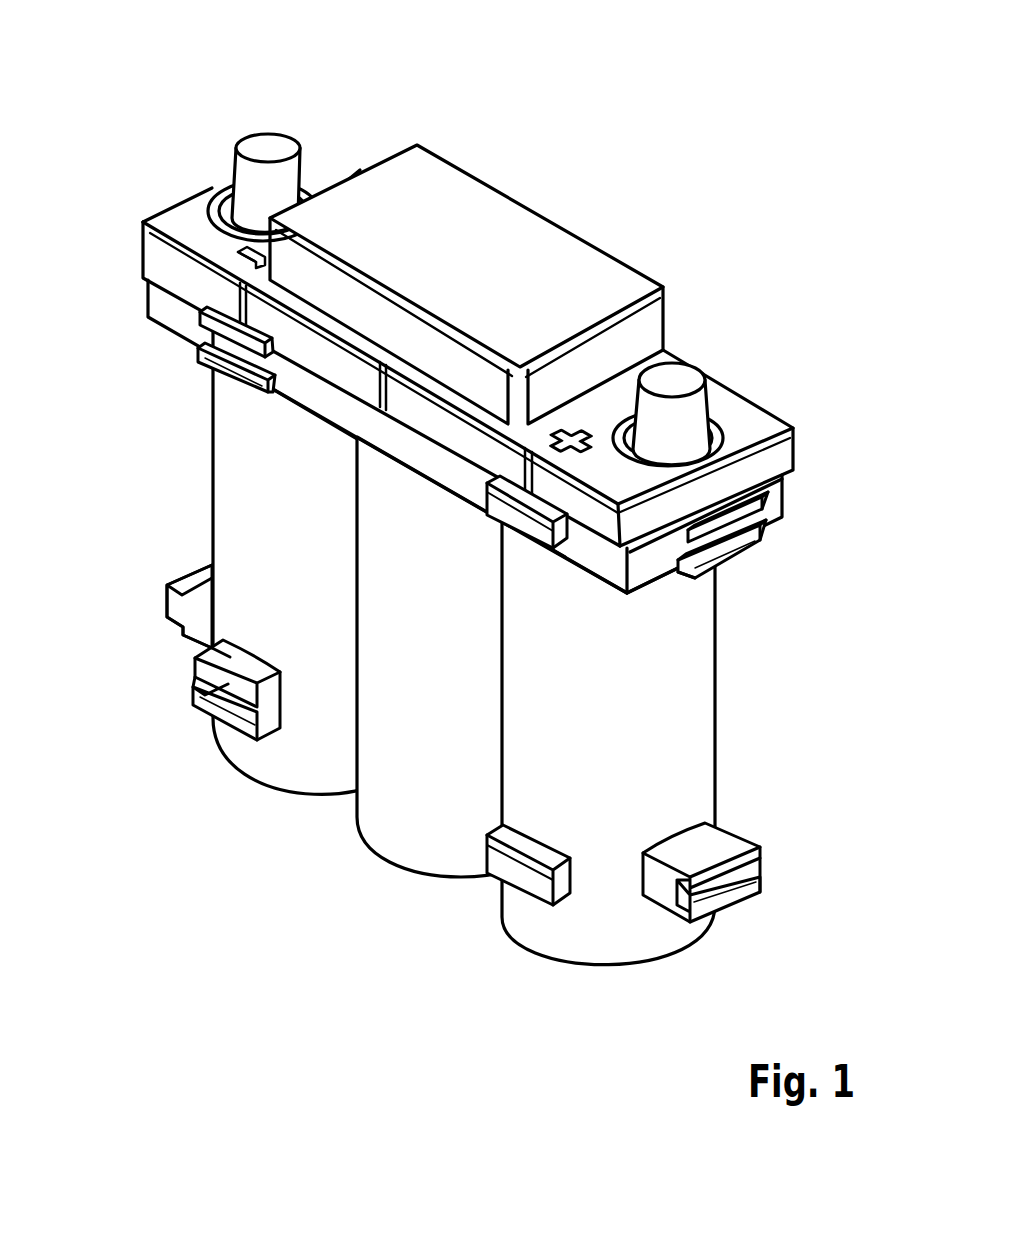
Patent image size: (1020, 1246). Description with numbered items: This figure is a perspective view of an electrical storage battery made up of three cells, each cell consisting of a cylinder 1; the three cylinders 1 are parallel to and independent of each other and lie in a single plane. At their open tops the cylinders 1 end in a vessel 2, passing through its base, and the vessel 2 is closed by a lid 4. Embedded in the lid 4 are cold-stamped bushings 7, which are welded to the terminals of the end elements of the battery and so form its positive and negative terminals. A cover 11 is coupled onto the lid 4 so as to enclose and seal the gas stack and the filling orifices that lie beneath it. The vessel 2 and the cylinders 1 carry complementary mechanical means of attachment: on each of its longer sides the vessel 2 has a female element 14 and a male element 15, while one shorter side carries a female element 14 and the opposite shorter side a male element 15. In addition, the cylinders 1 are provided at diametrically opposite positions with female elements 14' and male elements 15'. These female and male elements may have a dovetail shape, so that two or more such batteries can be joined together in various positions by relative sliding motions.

The cylinder 1 is at (302, 794).
The vessel 2 is at (789, 518).
The lid 4 is at (200, 228).
The cold-stamped bushing 7 is at (268, 146).
The cover 11 is at (497, 220).
The female element 14 is at (499, 463).
The female element 14' is at (483, 813).
The male element 15 is at (677, 652).
The male element 15' is at (321, 809).